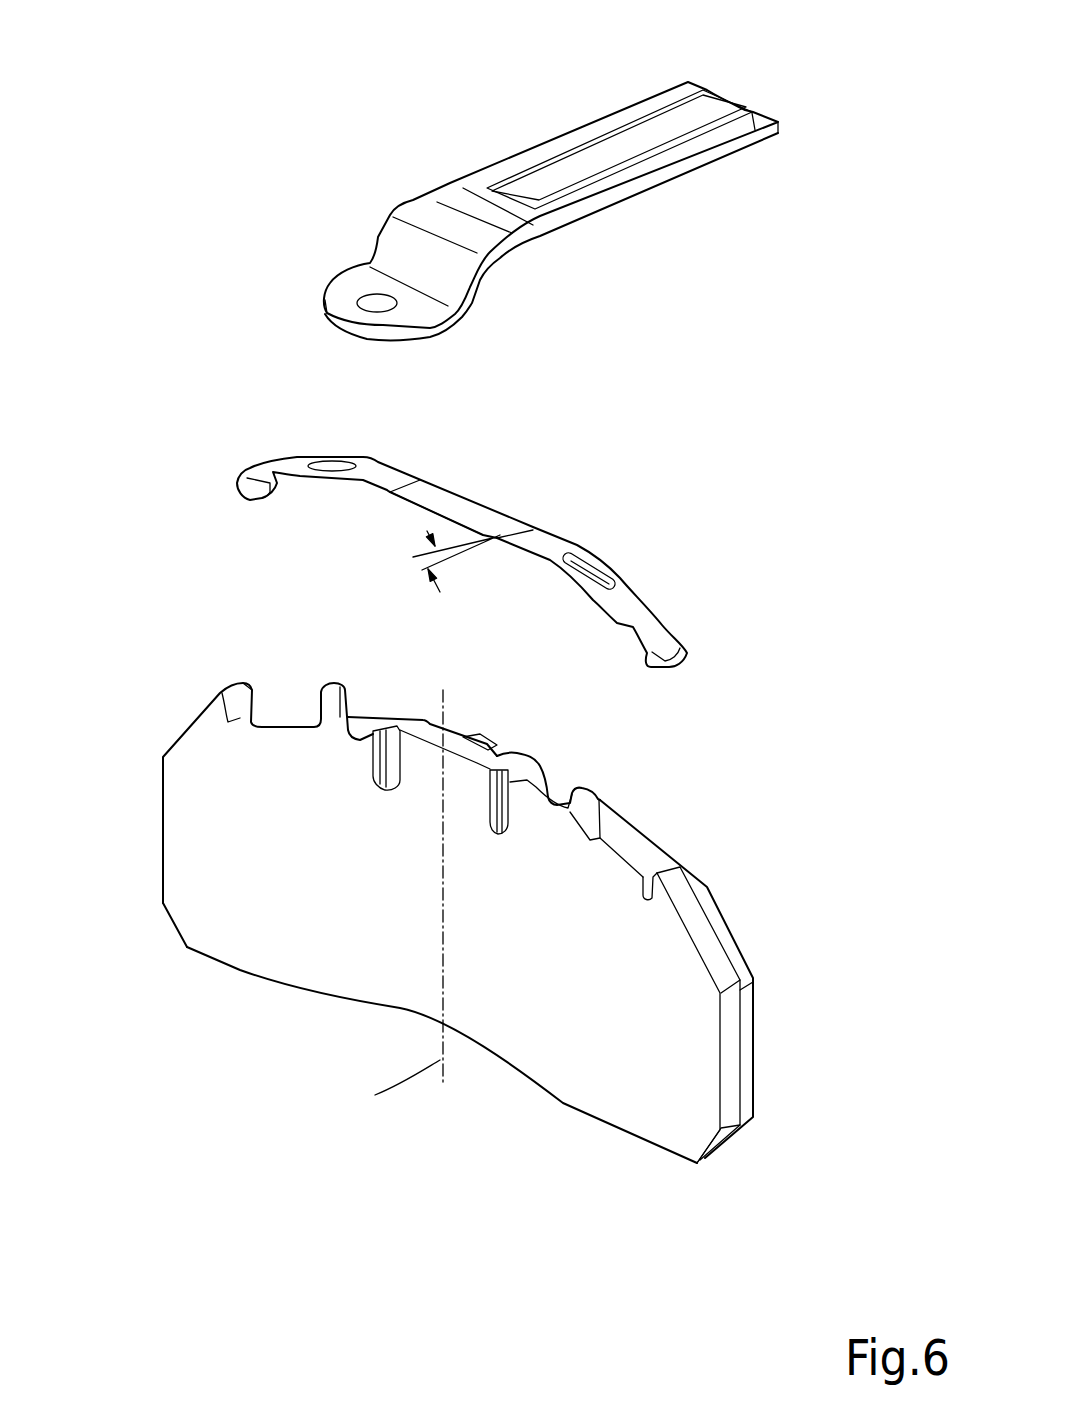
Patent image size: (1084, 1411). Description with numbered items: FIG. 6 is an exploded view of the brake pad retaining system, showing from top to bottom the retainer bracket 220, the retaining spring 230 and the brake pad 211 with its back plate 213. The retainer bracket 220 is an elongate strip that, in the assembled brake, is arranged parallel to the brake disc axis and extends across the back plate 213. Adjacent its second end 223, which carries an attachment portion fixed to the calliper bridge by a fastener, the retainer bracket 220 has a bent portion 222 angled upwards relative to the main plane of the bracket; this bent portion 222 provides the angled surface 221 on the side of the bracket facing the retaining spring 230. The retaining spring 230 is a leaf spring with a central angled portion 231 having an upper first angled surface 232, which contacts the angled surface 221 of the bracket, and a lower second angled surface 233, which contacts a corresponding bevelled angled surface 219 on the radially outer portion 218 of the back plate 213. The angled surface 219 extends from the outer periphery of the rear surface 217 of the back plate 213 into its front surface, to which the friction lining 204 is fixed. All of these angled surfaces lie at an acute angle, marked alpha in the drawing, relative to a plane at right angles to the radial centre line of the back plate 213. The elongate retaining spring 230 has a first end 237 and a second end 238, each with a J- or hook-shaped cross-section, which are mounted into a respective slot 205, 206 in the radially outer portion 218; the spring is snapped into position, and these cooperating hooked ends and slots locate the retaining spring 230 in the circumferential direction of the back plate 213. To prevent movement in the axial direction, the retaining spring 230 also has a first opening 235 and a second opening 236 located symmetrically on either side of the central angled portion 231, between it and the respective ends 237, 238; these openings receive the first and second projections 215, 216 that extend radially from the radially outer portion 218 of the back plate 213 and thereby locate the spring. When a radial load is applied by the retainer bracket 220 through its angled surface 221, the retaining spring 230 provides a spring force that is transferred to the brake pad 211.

The friction lining 204 is at (757, 1030).
The slot 205 is at (640, 891).
The slot 206 is at (240, 717).
The first brake pad 211 is at (305, 1037).
The back plate 213 is at (707, 947).
The first projection 215 is at (600, 797).
The second projection 216 is at (318, 690).
The rear surface 217 is at (197, 890).
The radially outer portion 218 is at (627, 867).
The angled surface 219 is at (433, 735).
The retainer bracket 220 is at (598, 163).
The angled surface 221 is at (498, 265).
The bent portion 222 is at (408, 190).
The second end 223 is at (317, 280).
The retaining spring 230 is at (647, 620).
The central angled portion 231 is at (513, 487).
The first angled surface 232 is at (500, 523).
The second angled surface 233 is at (413, 525).
The first opening 235 is at (593, 573).
The second opening 236 is at (328, 463).
The first end 237 is at (693, 655).
The second end 238 is at (230, 487).